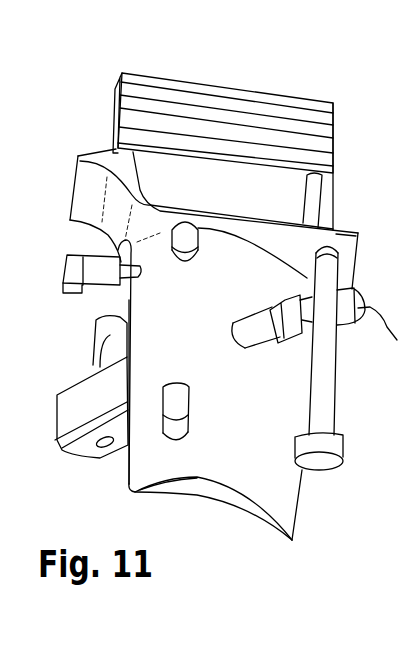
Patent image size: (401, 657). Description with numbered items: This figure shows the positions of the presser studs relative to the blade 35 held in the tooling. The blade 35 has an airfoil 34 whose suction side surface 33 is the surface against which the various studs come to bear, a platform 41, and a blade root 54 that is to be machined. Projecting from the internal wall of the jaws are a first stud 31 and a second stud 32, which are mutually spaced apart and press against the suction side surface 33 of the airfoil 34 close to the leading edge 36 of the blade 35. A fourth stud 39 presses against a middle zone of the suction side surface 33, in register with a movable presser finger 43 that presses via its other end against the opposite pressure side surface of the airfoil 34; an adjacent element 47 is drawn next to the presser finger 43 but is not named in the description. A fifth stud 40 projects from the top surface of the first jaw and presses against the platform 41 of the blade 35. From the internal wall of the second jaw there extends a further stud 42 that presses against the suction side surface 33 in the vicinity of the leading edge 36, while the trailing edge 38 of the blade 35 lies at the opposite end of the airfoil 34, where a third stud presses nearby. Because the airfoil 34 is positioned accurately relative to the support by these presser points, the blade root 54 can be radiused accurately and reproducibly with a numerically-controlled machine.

The blade 35 is at (242, 56).
The blade root 54 is at (143, 118).
The first stud 31 is at (187, 240).
The platform 41 is at (347, 242).
The stud 42 is at (73, 268).
The tab 47 is at (110, 335).
The presser finger 43 is at (90, 393).
The fourth stud 39 is at (253, 322).
The fifth stud 40 is at (340, 262).
The second stud 32 is at (180, 400).
The trailing edge 38 is at (308, 507).
The suction side surface 33 is at (247, 467).
The airfoil 34 is at (216, 529).
The leading edge 36 is at (120, 472).